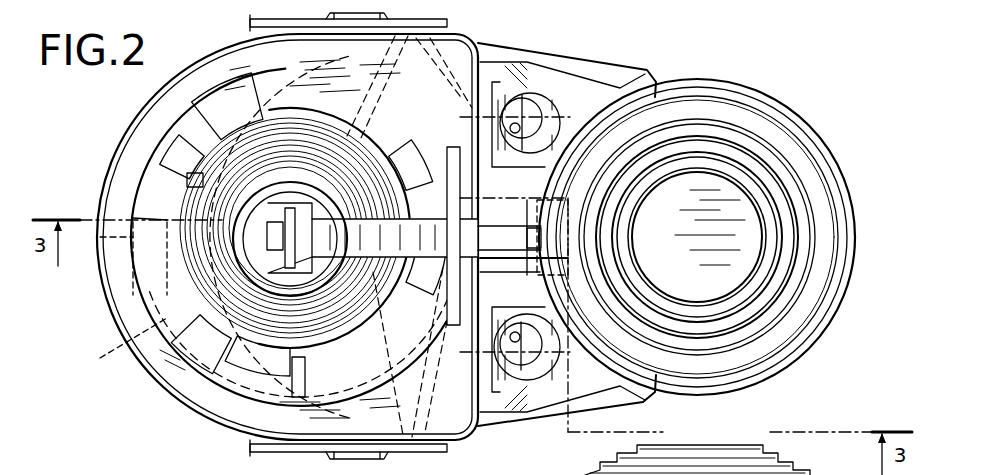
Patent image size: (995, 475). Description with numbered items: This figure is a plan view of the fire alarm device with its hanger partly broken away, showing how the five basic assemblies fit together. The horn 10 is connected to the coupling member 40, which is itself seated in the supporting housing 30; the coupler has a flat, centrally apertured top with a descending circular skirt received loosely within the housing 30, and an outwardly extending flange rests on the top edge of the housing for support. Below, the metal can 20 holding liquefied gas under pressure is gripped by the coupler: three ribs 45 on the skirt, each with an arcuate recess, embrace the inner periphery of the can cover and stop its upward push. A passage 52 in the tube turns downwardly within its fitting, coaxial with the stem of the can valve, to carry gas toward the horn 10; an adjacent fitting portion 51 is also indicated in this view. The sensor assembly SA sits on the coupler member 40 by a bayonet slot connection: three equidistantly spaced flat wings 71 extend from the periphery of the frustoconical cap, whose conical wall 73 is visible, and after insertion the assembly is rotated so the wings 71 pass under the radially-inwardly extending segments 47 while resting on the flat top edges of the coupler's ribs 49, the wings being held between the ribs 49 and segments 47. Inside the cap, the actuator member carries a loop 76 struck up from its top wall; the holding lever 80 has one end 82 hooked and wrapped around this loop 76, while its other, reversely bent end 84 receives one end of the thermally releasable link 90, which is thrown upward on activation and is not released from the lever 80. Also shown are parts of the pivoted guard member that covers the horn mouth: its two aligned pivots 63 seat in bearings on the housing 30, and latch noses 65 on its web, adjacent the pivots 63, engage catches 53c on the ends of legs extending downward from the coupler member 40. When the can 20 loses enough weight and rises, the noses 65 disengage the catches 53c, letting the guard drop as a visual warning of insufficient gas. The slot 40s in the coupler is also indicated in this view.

The horn 10 is at (802, 154).
The metal can 20 is at (148, 195).
The supporting housing 30 is at (592, 63).
The coupling member 40 is at (128, 170).
The stator slot 40s is at (118, 347).
The ribs 45 is at (185, 178).
The radially-inwardly extending segments 47 is at (282, 96).
The ribs 49 is at (167, 409).
The bearing housing 51 is at (538, 212).
The passage 52 is at (490, 234).
The catches 53c is at (531, 135).
The pivots 63 is at (515, 115).
The latch noses 65 is at (518, 122).
The flat wings 71 is at (257, 107).
The conical wall 73 is at (238, 202).
The loop 76 is at (289, 210).
The holding lever 80 is at (367, 260).
The lever end 82 is at (289, 245).
The lever end 84 is at (445, 232).
The thermally releasable link 90 is at (445, 293).
The sensor assembly SA is at (205, 263).